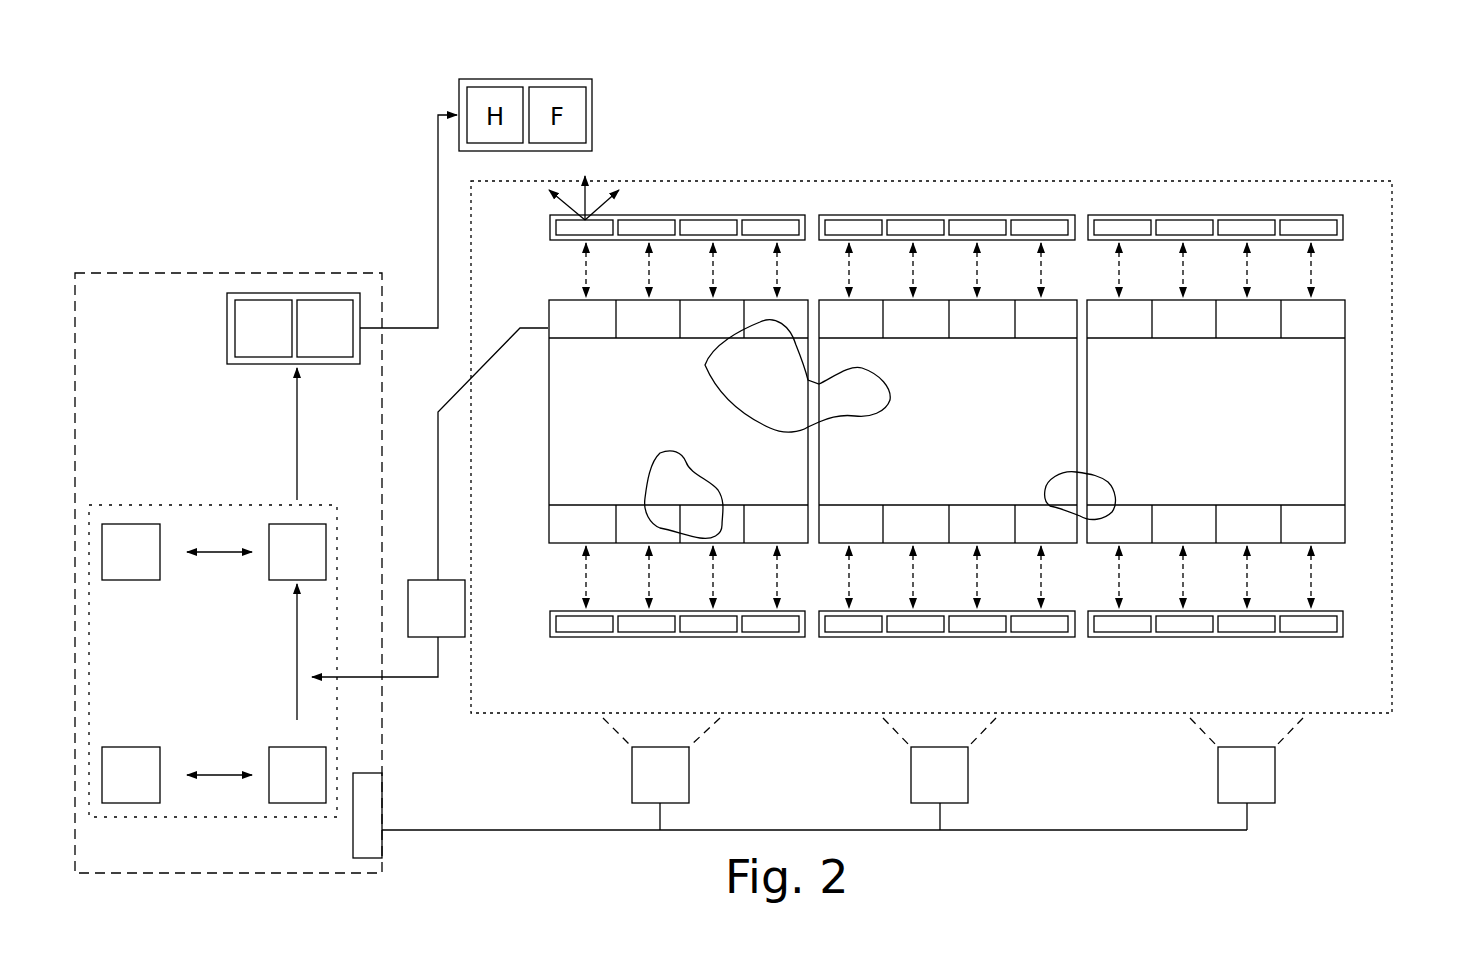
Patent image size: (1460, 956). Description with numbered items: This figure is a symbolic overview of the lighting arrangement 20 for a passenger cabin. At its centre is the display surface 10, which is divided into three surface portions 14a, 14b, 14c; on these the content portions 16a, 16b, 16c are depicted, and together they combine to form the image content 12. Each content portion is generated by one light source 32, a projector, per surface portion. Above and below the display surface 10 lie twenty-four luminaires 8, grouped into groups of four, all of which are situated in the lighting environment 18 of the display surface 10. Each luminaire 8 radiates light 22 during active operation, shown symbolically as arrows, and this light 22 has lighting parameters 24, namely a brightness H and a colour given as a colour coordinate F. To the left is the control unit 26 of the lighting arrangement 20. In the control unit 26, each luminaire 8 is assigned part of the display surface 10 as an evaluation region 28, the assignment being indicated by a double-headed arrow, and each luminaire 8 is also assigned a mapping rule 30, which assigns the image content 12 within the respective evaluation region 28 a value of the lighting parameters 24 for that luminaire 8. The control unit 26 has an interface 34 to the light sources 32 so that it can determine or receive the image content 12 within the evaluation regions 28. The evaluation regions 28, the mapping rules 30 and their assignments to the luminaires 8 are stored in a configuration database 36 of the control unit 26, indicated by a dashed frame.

The luminaire 8 is at (124, 565).
The display surface 10 is at (1353, 378).
The image content 12 is at (1363, 317).
The surface portion 14a is at (548, 410).
The surface portion 14b is at (937, 300).
The surface portion 14c is at (1345, 468).
The content portion 16a is at (657, 441).
The content portion 16b is at (925, 441).
The content portion 16c is at (1193, 441).
The lighting environment 18 is at (1149, 181).
The lighting arrangement 20 is at (1328, 160).
The light 22 is at (586, 219).
The lighting parameters 24 is at (278, 293).
The control unit 26 is at (163, 273).
The evaluation region 28 is at (284, 788).
The mapping rule 30 is at (284, 565).
The light source 32 is at (647, 787).
The interface 34 is at (370, 773).
The configuration database 36 is at (187, 500).